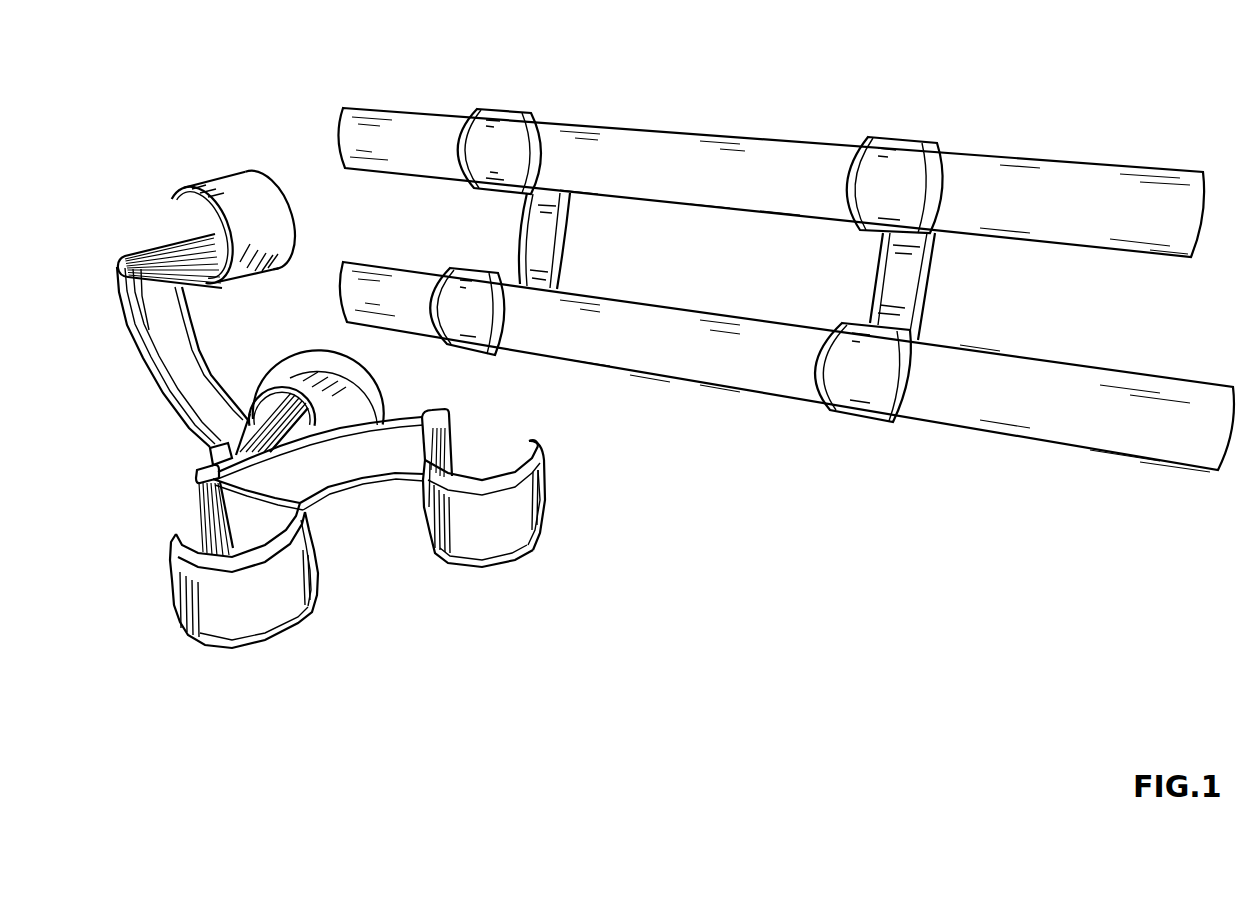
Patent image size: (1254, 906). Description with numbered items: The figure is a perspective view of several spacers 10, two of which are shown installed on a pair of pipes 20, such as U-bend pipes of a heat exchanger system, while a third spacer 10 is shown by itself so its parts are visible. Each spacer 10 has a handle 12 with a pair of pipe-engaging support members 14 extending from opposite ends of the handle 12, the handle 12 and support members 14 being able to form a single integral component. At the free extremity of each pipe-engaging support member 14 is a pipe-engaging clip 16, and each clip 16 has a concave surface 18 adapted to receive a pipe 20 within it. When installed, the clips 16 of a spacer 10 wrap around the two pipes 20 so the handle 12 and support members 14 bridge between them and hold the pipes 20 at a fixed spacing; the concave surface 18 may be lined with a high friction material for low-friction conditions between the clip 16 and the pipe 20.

The spacer 10 is at (181, 93).
The handle 12 is at (178, 348).
The pipe-engaging support member 14 is at (172, 260).
The pipe-engaging clip 16 is at (247, 190).
The concave surface 18 is at (190, 540).
The pipe 20 is at (772, 146).